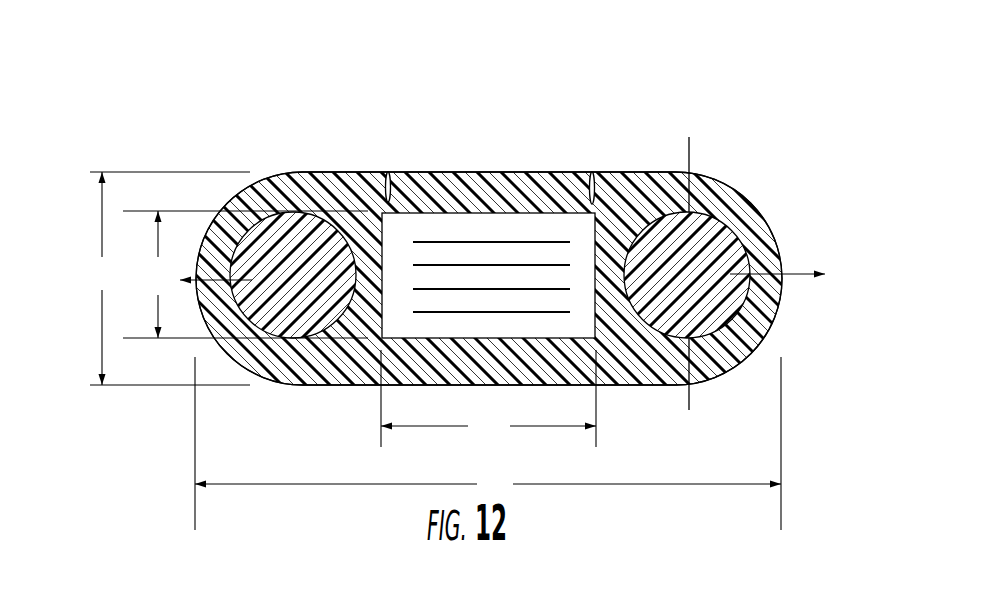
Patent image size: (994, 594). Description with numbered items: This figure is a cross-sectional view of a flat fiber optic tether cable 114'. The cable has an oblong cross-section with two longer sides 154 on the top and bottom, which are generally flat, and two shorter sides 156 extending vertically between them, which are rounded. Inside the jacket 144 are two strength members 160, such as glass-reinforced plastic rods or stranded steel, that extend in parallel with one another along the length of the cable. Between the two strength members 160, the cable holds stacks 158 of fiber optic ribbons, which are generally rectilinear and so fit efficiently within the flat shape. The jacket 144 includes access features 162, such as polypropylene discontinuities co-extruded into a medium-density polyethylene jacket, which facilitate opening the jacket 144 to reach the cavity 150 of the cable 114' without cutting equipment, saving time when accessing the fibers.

The tether cable 114' is at (489, 204).
The jacket 144 is at (632, 373).
The cavity 150 is at (465, 220).
The longer sides 154 is at (652, 165).
The shorter sides 156 is at (220, 201).
The stacks of fiber optic ribbons 158 is at (523, 265).
The strength members 160 is at (296, 258).
The access features 162 is at (390, 184).